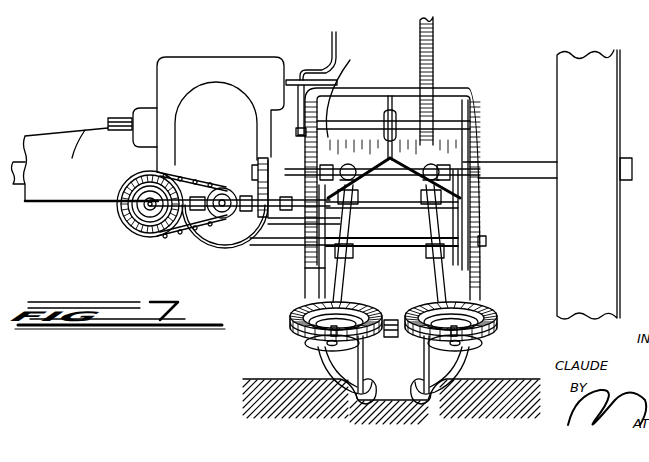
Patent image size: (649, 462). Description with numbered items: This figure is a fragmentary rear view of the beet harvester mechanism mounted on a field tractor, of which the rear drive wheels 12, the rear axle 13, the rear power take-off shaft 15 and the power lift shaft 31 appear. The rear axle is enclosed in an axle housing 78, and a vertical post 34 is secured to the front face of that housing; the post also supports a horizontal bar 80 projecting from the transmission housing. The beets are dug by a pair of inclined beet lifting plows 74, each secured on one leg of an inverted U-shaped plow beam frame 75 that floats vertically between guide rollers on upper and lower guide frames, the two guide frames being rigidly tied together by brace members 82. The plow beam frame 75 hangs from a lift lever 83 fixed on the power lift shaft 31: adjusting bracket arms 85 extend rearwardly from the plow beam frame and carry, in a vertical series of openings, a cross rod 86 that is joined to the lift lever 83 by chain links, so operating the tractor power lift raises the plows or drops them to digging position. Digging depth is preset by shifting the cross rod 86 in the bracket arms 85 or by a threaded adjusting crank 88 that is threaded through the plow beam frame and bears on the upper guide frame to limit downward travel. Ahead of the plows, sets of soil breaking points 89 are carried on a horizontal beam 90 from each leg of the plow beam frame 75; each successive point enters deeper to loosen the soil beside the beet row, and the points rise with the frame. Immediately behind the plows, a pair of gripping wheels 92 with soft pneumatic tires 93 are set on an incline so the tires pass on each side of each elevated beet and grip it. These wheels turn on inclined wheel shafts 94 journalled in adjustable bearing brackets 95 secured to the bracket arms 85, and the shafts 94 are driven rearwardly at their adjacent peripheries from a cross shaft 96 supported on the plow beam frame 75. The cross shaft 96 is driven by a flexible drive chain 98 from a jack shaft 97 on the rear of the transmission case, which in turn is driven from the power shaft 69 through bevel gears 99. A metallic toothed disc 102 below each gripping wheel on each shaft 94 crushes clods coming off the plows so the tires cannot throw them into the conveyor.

The rear drive wheels 12 is at (595, 98).
The rear axle 13 is at (517, 162).
The rear power take-off shaft 15 is at (222, 212).
The power lift shaft 31 is at (407, 127).
The vertical post 34 is at (436, 49).
The power shaft 69 is at (132, 234).
The beet lifting plows 74 is at (358, 407).
The plow beam frame 75 is at (472, 123).
The axle housing 78 is at (72, 158).
The horizontal bar 80 is at (277, 252).
The brace members 82 is at (476, 208).
The lift lever 83 is at (388, 113).
The adjusting bracket arms 85 is at (318, 222).
The cross rod 86 is at (447, 146).
The threaded adjusting crank 88 is at (328, 44).
The soil breaking points 89 is at (348, 395).
The horizontal beam 90 is at (392, 319).
The gripping wheels 92 is at (296, 332).
The pneumatic tires 93 is at (298, 308).
The inclined wheel shafts 94 is at (440, 284).
The adjustable bearing brackets 95 is at (447, 224).
The cross shaft 96 is at (394, 178).
The jack shaft 97 is at (232, 216).
The flexible drive chain 98 is at (262, 170).
The bevel gears 99 is at (182, 179).
The toothed disc 102 is at (318, 346).